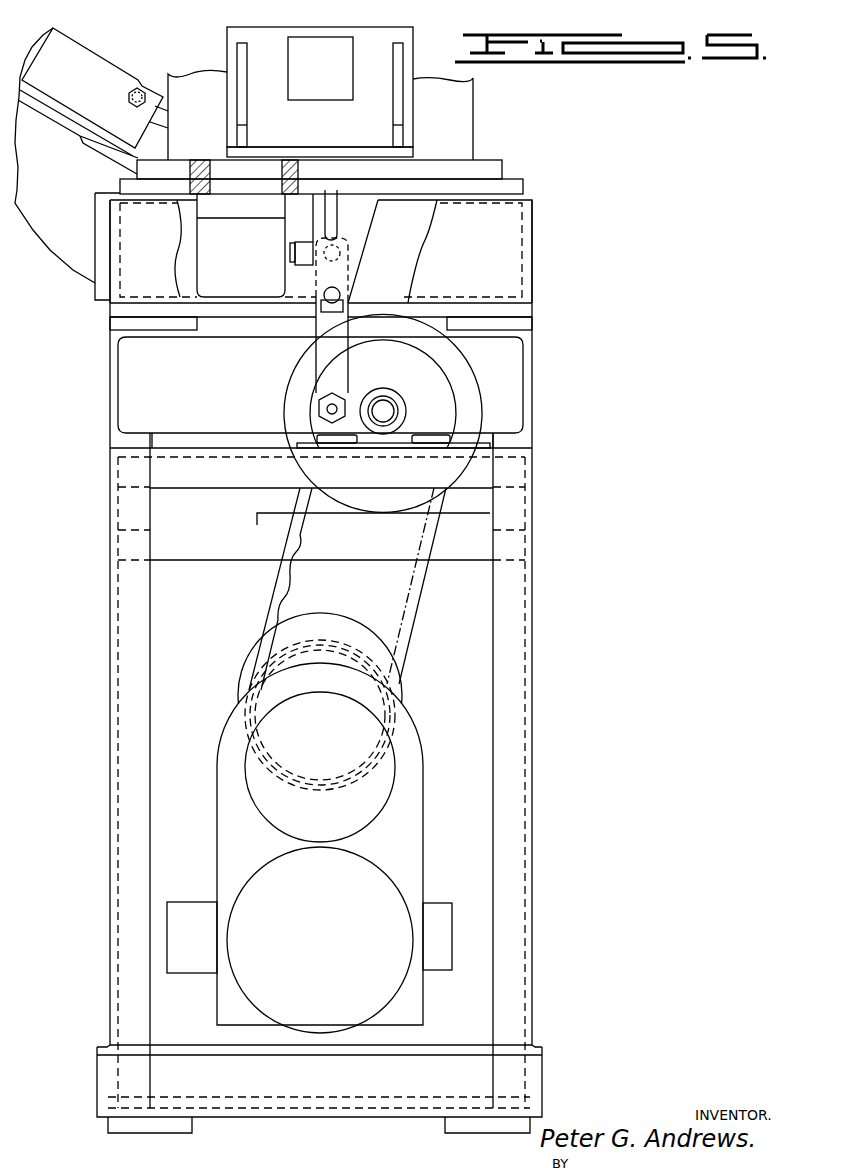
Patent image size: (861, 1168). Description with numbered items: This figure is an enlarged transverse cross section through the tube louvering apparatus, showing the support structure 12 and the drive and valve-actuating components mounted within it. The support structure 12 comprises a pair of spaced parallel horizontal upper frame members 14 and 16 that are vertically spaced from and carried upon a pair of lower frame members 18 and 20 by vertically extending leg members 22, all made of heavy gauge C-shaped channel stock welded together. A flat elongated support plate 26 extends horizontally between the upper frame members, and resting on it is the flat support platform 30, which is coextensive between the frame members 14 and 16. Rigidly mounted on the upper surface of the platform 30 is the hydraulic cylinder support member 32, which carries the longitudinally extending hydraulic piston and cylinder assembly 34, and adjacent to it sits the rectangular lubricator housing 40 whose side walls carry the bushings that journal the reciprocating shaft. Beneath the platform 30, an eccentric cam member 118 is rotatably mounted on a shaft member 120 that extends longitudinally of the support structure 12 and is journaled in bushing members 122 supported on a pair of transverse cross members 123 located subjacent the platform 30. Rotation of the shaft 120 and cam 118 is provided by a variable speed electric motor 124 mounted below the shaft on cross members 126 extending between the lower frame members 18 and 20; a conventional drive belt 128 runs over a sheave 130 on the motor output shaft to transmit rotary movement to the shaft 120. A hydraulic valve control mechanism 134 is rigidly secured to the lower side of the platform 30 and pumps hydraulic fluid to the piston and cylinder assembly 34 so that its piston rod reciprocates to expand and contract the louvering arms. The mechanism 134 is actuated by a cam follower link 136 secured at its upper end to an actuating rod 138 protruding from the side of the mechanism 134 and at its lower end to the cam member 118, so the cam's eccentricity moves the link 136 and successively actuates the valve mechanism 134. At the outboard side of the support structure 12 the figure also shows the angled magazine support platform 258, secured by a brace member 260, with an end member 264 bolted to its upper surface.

The support structure 12 is at (573, 798).
The upper frame member 14 is at (539, 242).
The upper frame member 16 is at (80, 280).
The lower frame member 18 is at (546, 1046).
The lower frame member 20 is at (95, 1050).
The leg members 22 is at (534, 680).
The support plate 26 is at (528, 189).
The support platform 30 is at (498, 160).
The hydraulic cylinder support member 32 is at (224, 40).
The hydraulic piston and cylinder assembly 34 is at (286, 82).
The lubricator housing 40 is at (478, 107).
The eccentric cam member 118 is at (287, 397).
The shaft member 120 is at (407, 408).
The bushing members 122 is at (302, 430).
The cross members 123 is at (168, 490).
The variable speed electric motor 124 is at (426, 832).
The cross members 126 is at (309, 1122).
The drive belt 128 is at (413, 639).
The sheave 130 is at (336, 632).
The hydraulic valve control mechanism 134 is at (224, 303).
The cam follower link 136 is at (313, 340).
The actuating rod 138 is at (298, 240).
The support platform 258 is at (72, 135).
The brace member 260 is at (57, 258).
The end member 264 is at (101, 50).